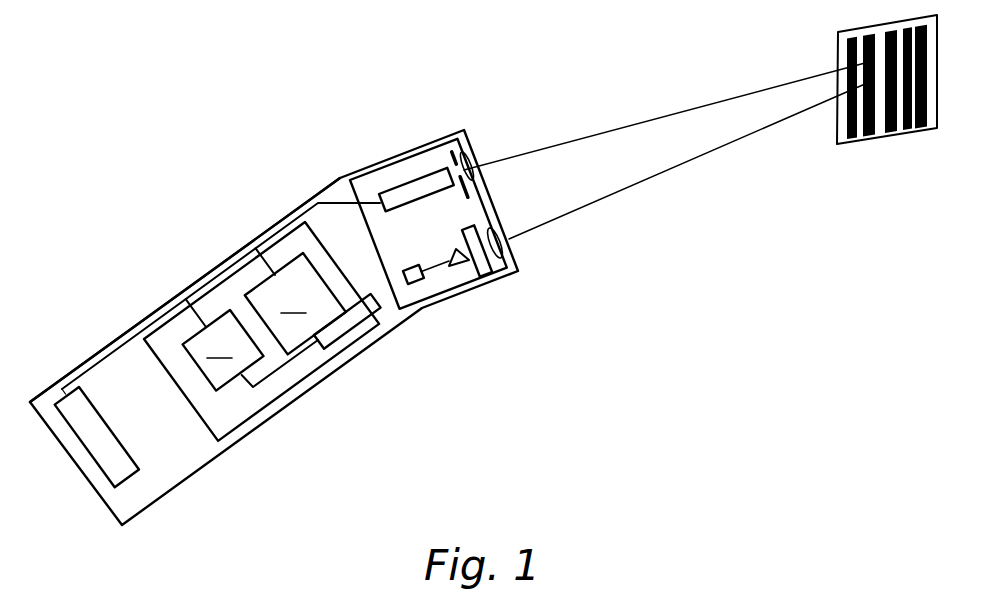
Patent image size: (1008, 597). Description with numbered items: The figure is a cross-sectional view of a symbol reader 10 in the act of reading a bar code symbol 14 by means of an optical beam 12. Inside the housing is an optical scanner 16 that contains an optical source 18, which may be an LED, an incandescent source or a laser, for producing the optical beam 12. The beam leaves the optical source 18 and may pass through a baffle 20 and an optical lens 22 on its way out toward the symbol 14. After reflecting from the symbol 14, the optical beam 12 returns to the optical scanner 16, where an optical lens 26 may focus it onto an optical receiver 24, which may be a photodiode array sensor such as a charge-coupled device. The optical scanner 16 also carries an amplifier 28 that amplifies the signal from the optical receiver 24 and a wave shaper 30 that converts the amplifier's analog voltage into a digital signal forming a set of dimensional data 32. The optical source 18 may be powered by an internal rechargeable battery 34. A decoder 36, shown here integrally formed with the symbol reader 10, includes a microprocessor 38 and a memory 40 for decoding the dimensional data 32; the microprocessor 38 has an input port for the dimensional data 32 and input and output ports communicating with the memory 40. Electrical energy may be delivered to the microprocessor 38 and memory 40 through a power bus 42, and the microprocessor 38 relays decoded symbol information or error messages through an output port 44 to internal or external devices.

The symbol reader 10 is at (66, 362).
The optical beam 12 is at (608, 134).
The symbol 14 is at (837, 125).
The optical scanner 16 is at (423, 143).
The optical source 18 is at (397, 187).
The baffle 20 is at (472, 173).
The optical lens 22 is at (470, 153).
The optical receiver 24 is at (491, 281).
The optical lens 26 is at (513, 248).
The amplifier 28 is at (463, 269).
The wave shaper 30 is at (420, 290).
The dimensional data 32 is at (380, 323).
The rechargeable battery 34 is at (93, 443).
The decoder 36 is at (292, 218).
The microprocessor 38 is at (295, 301).
The memory 40 is at (250, 345).
The power bus 42 is at (214, 270).
The output port 44 is at (330, 358).